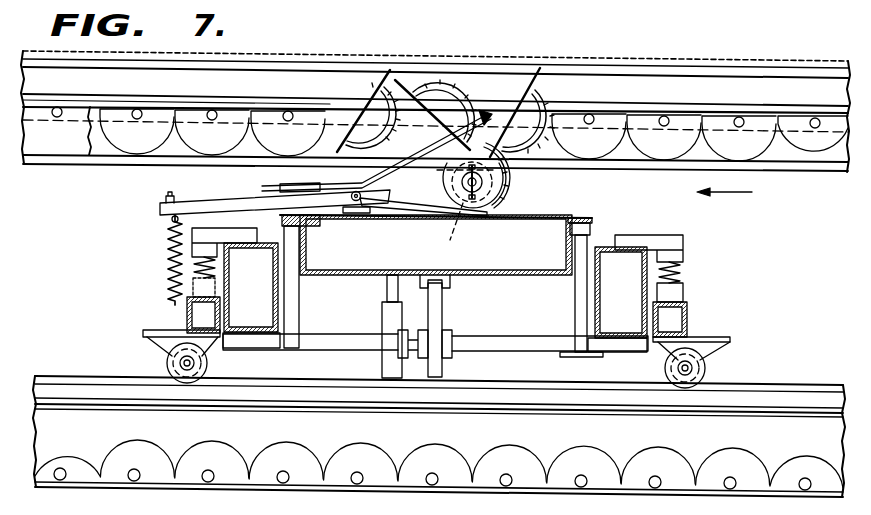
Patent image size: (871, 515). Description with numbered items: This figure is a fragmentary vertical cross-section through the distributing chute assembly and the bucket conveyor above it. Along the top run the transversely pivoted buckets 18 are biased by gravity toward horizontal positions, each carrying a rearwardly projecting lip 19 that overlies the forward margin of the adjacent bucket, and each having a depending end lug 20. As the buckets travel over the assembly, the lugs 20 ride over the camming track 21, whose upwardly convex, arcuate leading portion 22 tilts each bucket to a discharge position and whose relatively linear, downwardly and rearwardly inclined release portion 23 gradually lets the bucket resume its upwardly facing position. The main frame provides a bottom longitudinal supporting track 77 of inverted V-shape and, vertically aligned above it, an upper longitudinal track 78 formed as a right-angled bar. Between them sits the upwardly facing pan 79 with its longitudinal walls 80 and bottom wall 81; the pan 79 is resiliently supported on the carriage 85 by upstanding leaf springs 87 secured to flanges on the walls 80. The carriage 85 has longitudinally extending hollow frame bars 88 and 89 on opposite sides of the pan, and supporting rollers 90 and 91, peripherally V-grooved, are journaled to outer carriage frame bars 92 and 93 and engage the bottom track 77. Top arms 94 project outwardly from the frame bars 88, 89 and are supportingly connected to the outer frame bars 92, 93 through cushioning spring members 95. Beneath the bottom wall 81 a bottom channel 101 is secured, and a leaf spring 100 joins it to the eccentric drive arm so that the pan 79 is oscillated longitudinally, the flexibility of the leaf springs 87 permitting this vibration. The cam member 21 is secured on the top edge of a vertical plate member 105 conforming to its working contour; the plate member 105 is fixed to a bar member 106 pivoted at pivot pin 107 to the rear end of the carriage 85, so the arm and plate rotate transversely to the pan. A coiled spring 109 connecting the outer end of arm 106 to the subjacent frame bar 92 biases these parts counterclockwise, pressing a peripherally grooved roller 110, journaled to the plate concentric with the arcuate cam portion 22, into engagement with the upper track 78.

The buckets 18 is at (543, 93).
The lip 19 is at (343, 105).
The end lug 20 is at (402, 172).
The camming track 21 is at (280, 190).
The leading portion 22 is at (505, 160).
The release portion 23 is at (462, 186).
The bottom longitudinal supporting track 77 is at (48, 375).
The upper longitudinal track 78 is at (50, 163).
The pan 79 is at (592, 217).
The longitudinal walls 80 is at (316, 244).
The bottom wall 81 is at (340, 273).
The carriage 85 is at (732, 337).
The leaf springs 87 is at (290, 290).
The frame bar 88 is at (598, 310).
The frame bar 89 is at (226, 298).
The supporting roller 90 is at (167, 363).
The supporting roller 91 is at (703, 372).
The outer carriage frame bar 92 is at (188, 312).
The outer carriage frame bar 93 is at (687, 303).
The top arms 94 is at (215, 237).
The cushioning spring members 95 is at (682, 267).
The leaf spring 100 is at (442, 318).
The bottom channel 101 is at (452, 283).
The plate member 105 is at (480, 205).
The bar member 106 is at (204, 203).
The pivot pin 107 is at (362, 207).
The coiled spring 109 is at (170, 240).
The peripherally grooved roller 110 is at (440, 234).